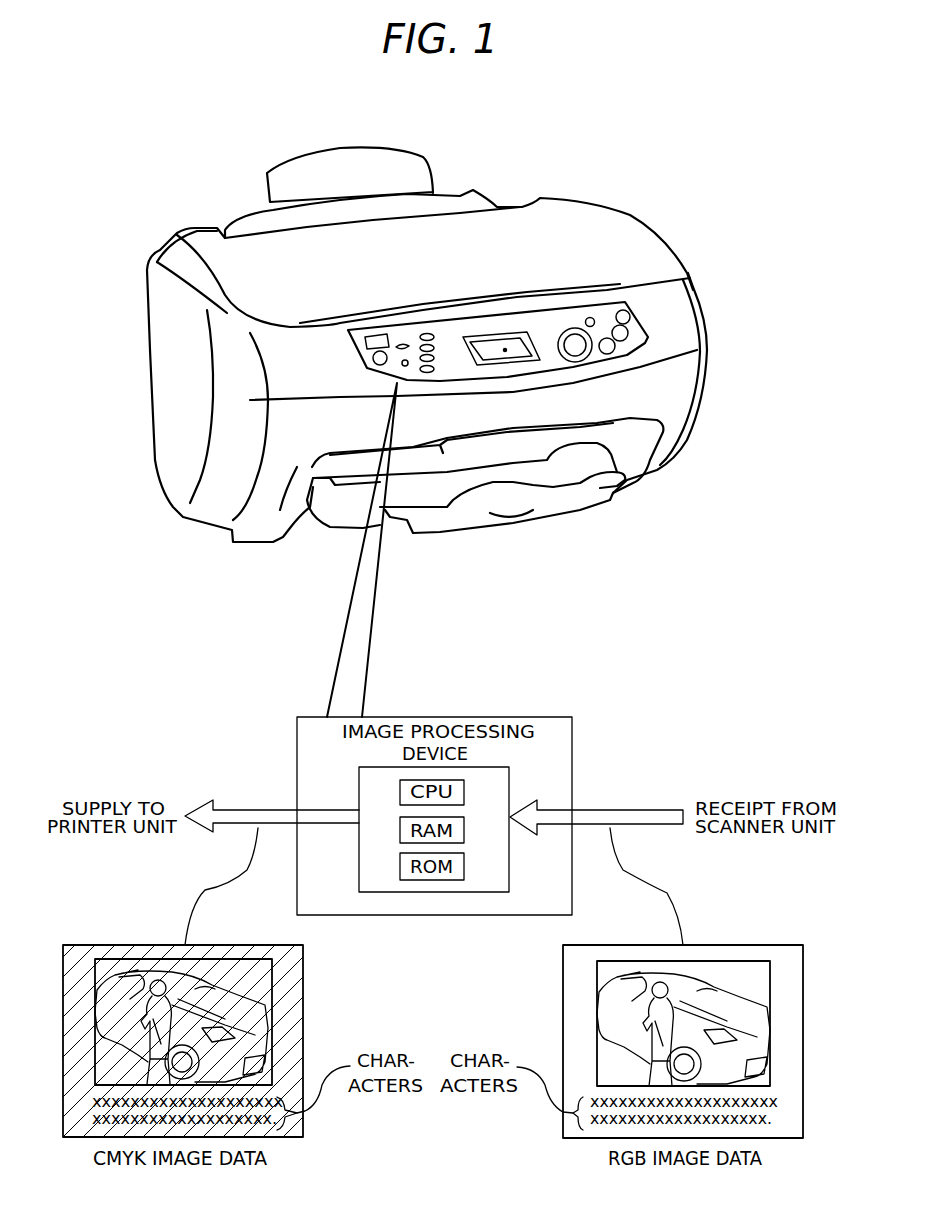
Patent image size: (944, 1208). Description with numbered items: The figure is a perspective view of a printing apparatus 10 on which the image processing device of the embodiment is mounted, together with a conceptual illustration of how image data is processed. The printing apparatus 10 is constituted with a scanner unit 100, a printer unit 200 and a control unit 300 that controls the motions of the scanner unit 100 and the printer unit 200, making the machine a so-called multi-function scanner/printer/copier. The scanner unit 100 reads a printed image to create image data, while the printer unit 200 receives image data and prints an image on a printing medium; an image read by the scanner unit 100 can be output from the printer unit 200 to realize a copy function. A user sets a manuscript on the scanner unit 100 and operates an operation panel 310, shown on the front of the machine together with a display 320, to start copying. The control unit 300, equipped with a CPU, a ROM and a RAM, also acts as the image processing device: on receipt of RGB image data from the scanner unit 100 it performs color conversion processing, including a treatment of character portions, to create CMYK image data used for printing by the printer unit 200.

The printing apparatus 10 is at (559, 124).
The scanner unit 100 is at (600, 171).
The printer unit 200 is at (737, 355).
The control unit 300 is at (718, 273).
The operation panel 310 is at (380, 330).
The display unit 320 is at (505, 350).